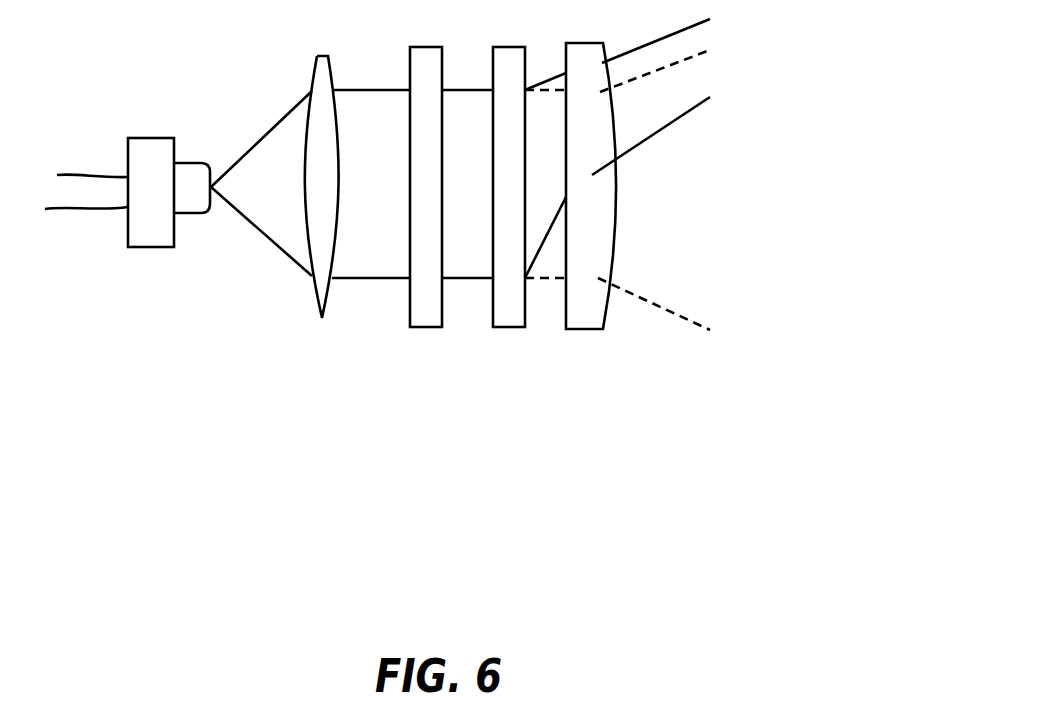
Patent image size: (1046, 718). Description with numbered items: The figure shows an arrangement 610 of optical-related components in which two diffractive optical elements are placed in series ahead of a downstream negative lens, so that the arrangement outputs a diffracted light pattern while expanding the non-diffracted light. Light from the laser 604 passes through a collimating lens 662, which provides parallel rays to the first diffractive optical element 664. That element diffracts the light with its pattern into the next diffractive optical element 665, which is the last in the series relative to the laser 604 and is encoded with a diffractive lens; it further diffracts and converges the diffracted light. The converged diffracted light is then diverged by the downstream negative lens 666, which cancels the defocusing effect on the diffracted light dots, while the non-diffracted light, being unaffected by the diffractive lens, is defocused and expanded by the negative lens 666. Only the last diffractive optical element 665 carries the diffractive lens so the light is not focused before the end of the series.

The laser 604 is at (155, 225).
The arrangement 610 is at (460, 242).
The collimating lens 662 is at (320, 298).
The first diffractive optical element 664 is at (428, 313).
The second diffractive optical element 665 is at (508, 308).
The downstream negative lens 666 is at (589, 215).